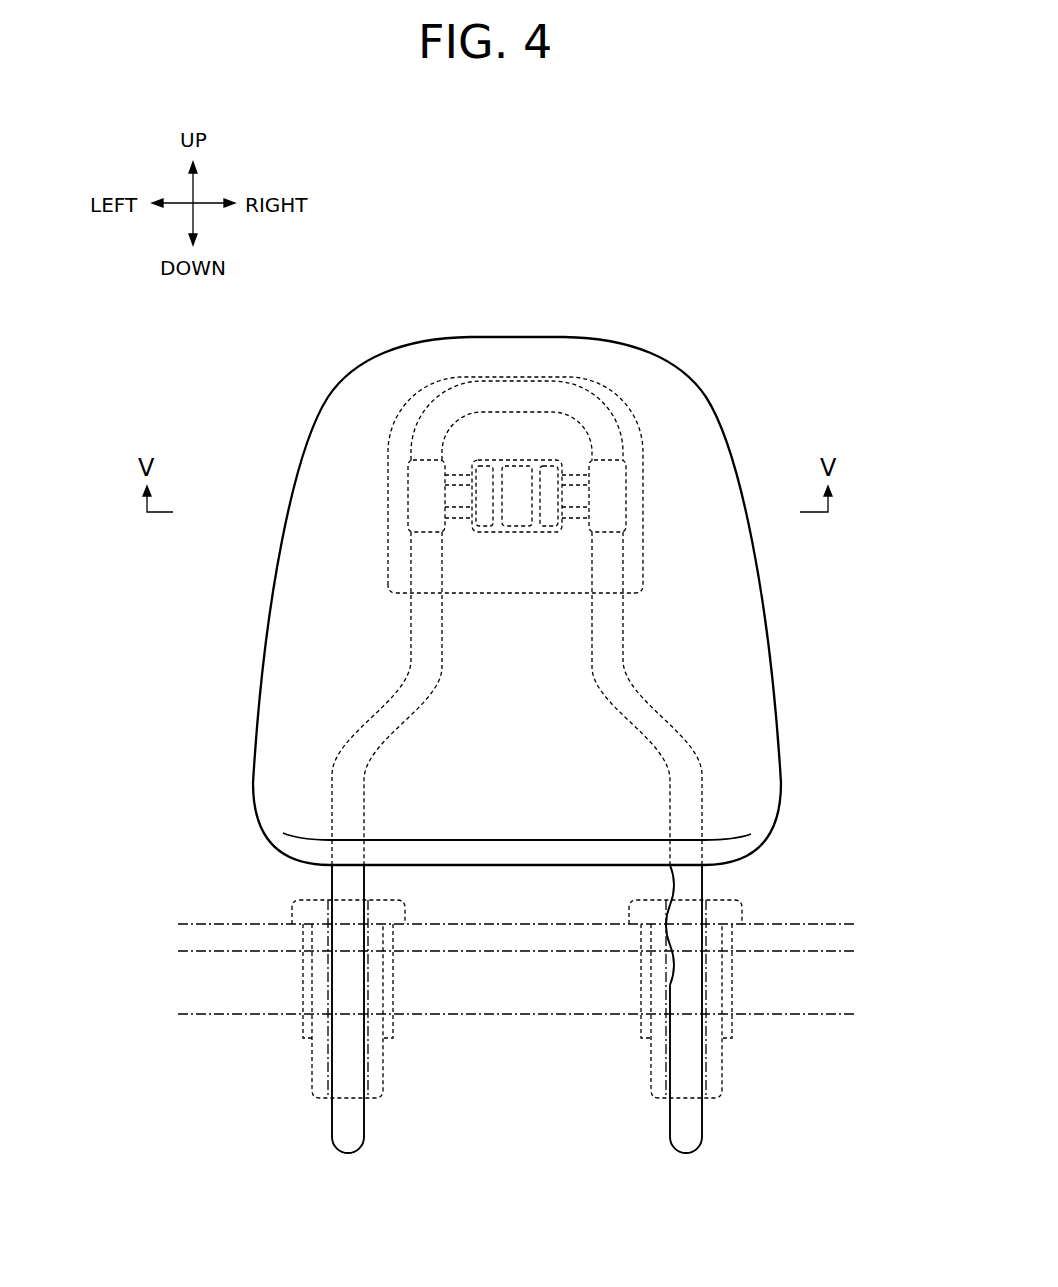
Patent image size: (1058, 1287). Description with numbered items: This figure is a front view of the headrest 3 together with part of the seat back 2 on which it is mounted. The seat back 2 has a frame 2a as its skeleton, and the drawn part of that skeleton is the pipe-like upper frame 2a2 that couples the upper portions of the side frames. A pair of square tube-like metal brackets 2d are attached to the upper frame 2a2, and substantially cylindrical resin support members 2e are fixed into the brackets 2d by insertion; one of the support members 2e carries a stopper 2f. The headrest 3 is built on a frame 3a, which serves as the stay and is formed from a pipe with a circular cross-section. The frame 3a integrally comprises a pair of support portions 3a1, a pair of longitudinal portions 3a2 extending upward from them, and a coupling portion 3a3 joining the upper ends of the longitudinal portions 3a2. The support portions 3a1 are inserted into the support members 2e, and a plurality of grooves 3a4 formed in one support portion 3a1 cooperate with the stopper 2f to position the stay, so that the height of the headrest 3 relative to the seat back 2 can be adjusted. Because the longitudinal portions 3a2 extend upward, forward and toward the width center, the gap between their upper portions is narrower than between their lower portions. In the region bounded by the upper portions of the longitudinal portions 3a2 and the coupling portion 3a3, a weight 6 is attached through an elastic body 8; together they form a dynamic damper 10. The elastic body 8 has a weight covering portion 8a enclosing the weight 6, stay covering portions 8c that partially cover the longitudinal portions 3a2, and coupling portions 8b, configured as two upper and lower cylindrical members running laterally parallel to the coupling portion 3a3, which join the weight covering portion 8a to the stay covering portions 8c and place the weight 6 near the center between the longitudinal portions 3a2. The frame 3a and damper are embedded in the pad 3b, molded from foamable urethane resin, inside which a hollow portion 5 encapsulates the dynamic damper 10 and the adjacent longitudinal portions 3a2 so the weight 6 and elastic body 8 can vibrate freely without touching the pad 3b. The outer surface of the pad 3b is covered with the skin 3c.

The seat back 2 is at (517, 994).
The frame 2a is at (517, 1066).
The upper frame 2a2 is at (517, 1060).
The brackets 2d is at (385, 1022).
The support members 2e is at (517, 1018).
The stopper 2f is at (658, 945).
The headrest 3 is at (478, 601).
The frame 3a is at (538, 718).
The support portions 3a1 is at (523, 1003).
The longitudinal portions 3a2 is at (442, 662).
The coupling portion 3a3 is at (478, 378).
The grooves 3a4 is at (672, 893).
The pad 3b is at (290, 711).
The skin 3c is at (292, 755).
The hollow portion 5 is at (643, 422).
The weight 6 is at (528, 480).
The elastic body 8 is at (405, 432).
The weight covering portion 8a is at (412, 500).
The coupling portions 8b is at (408, 478).
The stay covering portions 8c is at (432, 517).
The dynamic damper 10 is at (422, 412).